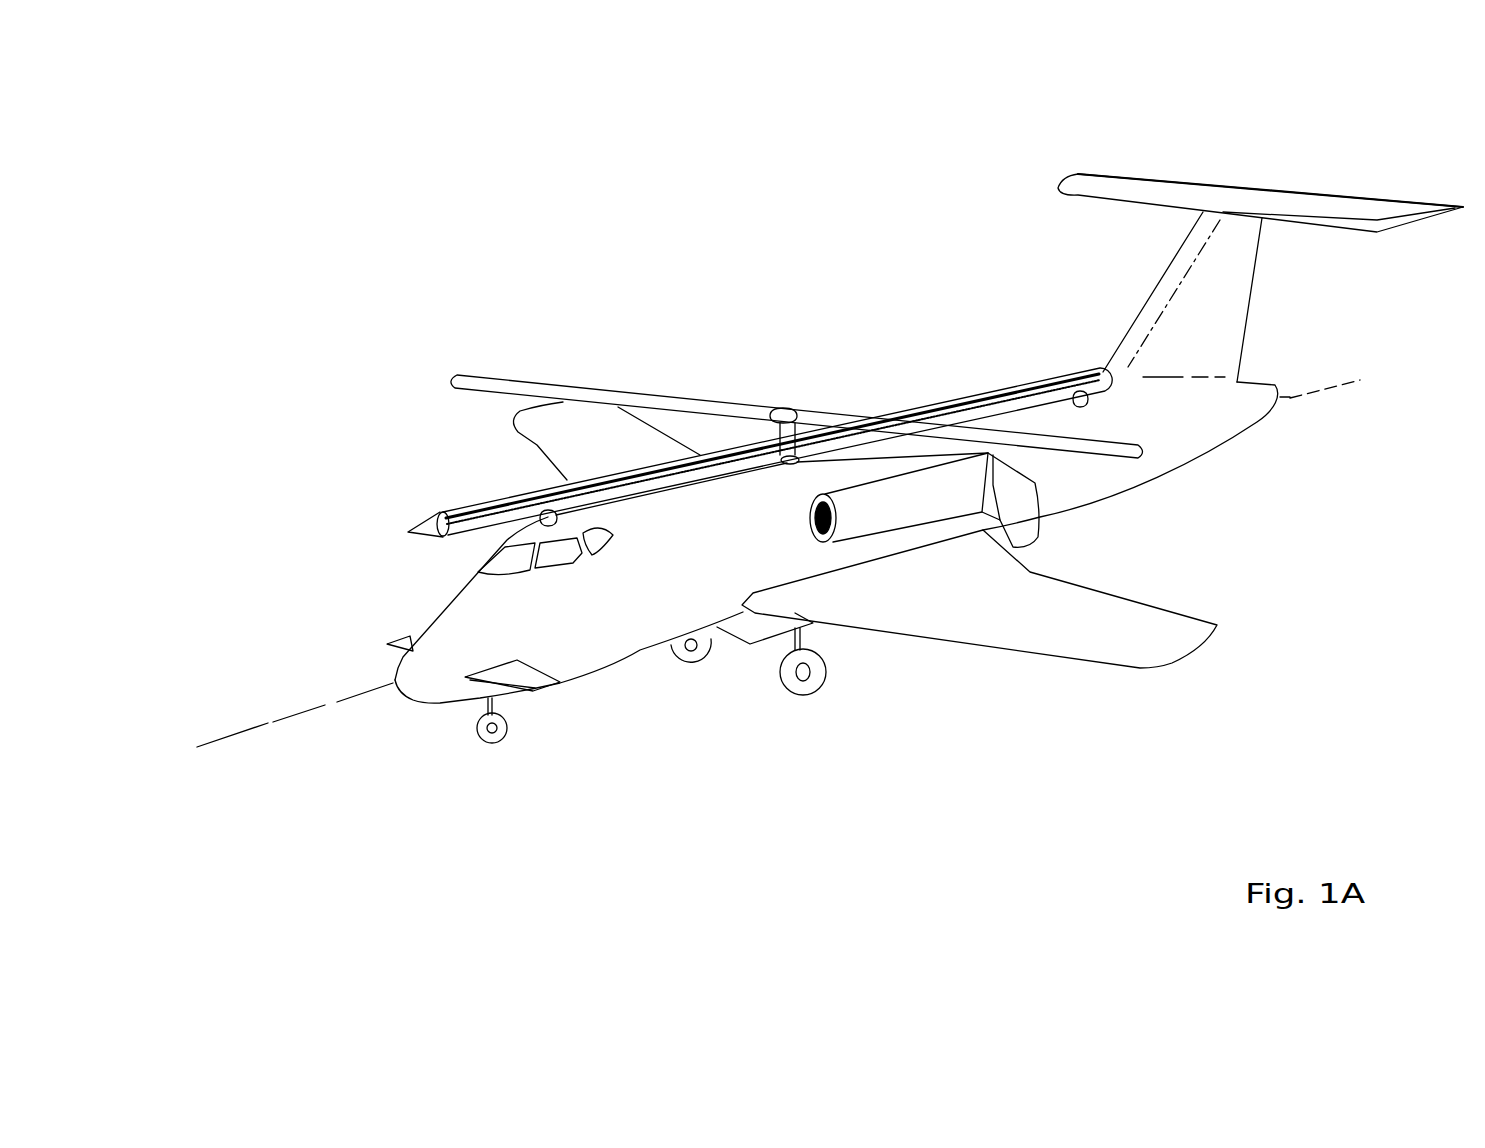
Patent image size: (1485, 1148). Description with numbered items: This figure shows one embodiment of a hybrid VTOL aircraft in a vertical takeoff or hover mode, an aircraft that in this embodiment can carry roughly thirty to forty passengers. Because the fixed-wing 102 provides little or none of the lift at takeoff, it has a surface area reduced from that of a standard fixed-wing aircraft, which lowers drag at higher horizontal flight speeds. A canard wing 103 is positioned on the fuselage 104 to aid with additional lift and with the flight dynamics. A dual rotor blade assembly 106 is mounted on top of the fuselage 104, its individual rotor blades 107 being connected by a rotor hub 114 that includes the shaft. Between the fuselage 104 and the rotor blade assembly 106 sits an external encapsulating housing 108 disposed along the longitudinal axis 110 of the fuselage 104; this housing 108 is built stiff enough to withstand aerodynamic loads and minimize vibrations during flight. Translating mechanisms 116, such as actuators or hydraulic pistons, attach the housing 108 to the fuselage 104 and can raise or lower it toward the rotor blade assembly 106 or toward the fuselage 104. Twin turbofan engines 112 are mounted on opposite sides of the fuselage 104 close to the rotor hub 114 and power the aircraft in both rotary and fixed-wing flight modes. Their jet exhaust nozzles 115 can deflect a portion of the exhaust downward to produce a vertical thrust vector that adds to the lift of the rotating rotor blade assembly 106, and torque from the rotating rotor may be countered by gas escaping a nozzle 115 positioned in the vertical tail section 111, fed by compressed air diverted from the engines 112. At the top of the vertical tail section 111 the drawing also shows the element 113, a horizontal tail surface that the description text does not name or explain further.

The fixed-wing 102 is at (1192, 630).
The canard wing 103 is at (410, 636).
The fuselage 104 is at (543, 690).
The dual rotor blade assembly 106 is at (790, 410).
The rotor blades 107 is at (535, 380).
The external encapsulating housing 108 is at (1035, 383).
The longitudinal axis 110 is at (310, 713).
The vertical tail section 111 is at (1172, 267).
The turbofan engines 112 is at (875, 541).
The horizontal stabilizer 113 is at (1392, 208).
The rotor hub 114 is at (777, 418).
The jet exhaust nozzles 115 is at (1210, 300).
The translating mechanisms 116 is at (557, 518).